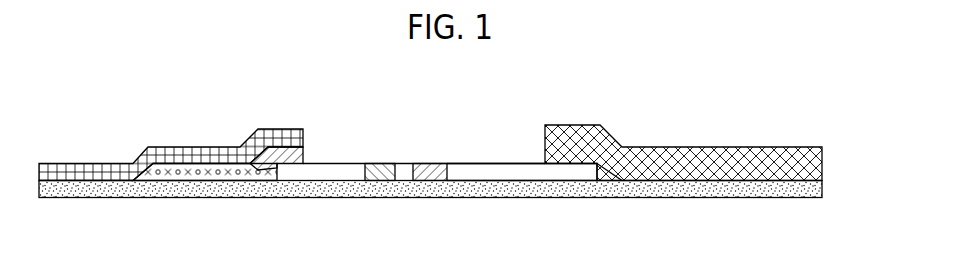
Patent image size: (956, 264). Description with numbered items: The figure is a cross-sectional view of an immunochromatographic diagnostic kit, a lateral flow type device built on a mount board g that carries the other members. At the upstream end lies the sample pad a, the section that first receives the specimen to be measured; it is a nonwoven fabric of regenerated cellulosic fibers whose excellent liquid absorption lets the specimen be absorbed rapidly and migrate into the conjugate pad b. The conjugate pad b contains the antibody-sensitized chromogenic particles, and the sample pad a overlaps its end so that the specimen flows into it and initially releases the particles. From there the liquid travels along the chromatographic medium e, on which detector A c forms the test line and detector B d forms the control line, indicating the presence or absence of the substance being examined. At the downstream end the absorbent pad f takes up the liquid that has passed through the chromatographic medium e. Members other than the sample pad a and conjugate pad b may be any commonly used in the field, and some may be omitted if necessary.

The sample pad a is at (98, 160).
The conjugate pad b is at (306, 157).
The detector A c is at (379, 159).
The detector B d is at (429, 159).
The chromatographic medium e is at (515, 160).
The absorbent pad f is at (683, 145).
The mount board g is at (824, 182).